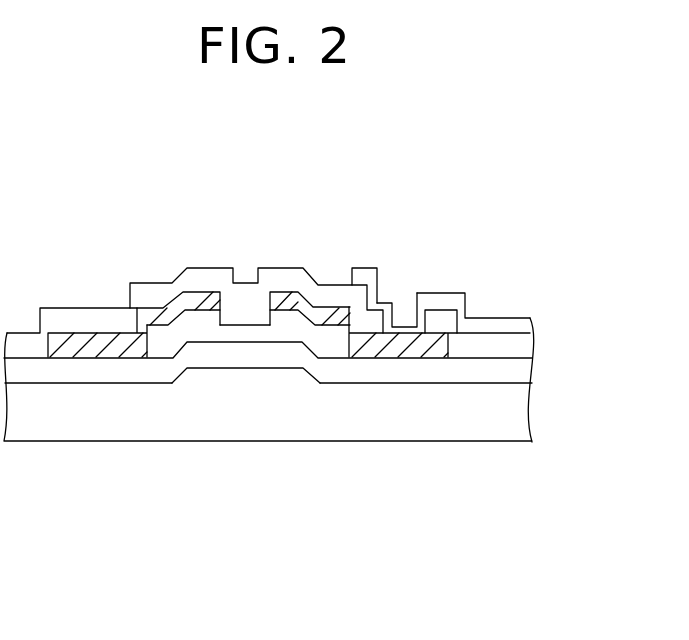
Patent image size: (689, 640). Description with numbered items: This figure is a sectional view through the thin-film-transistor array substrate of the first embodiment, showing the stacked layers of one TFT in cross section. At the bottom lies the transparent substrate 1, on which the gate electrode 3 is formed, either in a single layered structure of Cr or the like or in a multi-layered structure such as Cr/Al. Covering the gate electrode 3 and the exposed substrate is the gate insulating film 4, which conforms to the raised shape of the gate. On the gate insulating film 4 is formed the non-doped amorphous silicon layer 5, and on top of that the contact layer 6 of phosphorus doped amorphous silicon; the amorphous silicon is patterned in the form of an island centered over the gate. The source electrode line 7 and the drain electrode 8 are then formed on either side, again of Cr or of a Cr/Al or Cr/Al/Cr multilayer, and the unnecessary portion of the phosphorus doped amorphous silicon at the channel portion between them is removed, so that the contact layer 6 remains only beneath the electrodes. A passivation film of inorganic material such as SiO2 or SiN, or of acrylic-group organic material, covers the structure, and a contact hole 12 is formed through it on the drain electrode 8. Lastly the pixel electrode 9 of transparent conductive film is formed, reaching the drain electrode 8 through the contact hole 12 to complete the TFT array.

The transparent substrate 1 is at (158, 420).
The gate electrode 3 is at (249, 377).
The gate insulating film 4 is at (378, 375).
The non-doped amorphous silicon layer 5 is at (288, 327).
The contact layer 6 is at (198, 313).
The source electrode line 7 is at (153, 317).
The drain electrode 8 is at (333, 317).
The pixel electrode 9 is at (443, 302).
The contact hole 12 is at (409, 303).